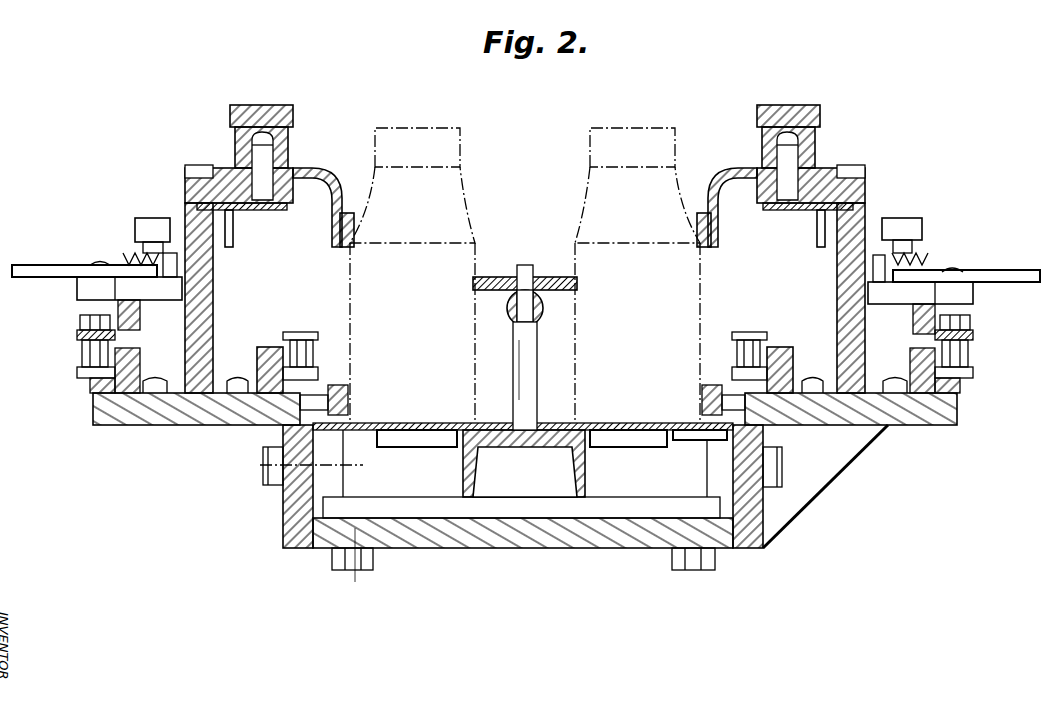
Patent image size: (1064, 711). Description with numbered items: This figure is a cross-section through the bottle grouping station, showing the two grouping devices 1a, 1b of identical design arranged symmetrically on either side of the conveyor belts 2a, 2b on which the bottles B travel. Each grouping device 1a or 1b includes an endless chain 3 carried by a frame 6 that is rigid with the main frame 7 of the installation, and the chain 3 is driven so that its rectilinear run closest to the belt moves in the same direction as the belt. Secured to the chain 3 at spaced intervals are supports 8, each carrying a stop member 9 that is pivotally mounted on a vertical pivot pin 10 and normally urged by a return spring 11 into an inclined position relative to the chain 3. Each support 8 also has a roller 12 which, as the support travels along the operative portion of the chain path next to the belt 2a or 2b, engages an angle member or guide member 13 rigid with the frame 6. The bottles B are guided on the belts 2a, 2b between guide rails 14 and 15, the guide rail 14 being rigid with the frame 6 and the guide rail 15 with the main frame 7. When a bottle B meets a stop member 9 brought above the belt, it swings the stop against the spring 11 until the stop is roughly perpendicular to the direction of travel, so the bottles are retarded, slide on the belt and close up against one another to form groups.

The grouping device 1a is at (538, 405).
The grouping device 1b is at (988, 352).
The conveyor belt 2a is at (424, 432).
The conveyor belt 2b is at (632, 433).
The endless chain 3 is at (93, 363).
The frame 6 is at (200, 272).
The main frame 7 is at (282, 510).
The support 8 is at (90, 288).
The stop member 9 is at (40, 267).
The vertical pivot pin 10 is at (97, 263).
The return spring 11 is at (138, 252).
The roller 12 is at (137, 218).
The guide member 13 is at (233, 232).
The guide rail 14 is at (350, 220).
The guide rail 15 is at (473, 292).
The bottles B is at (594, 197).